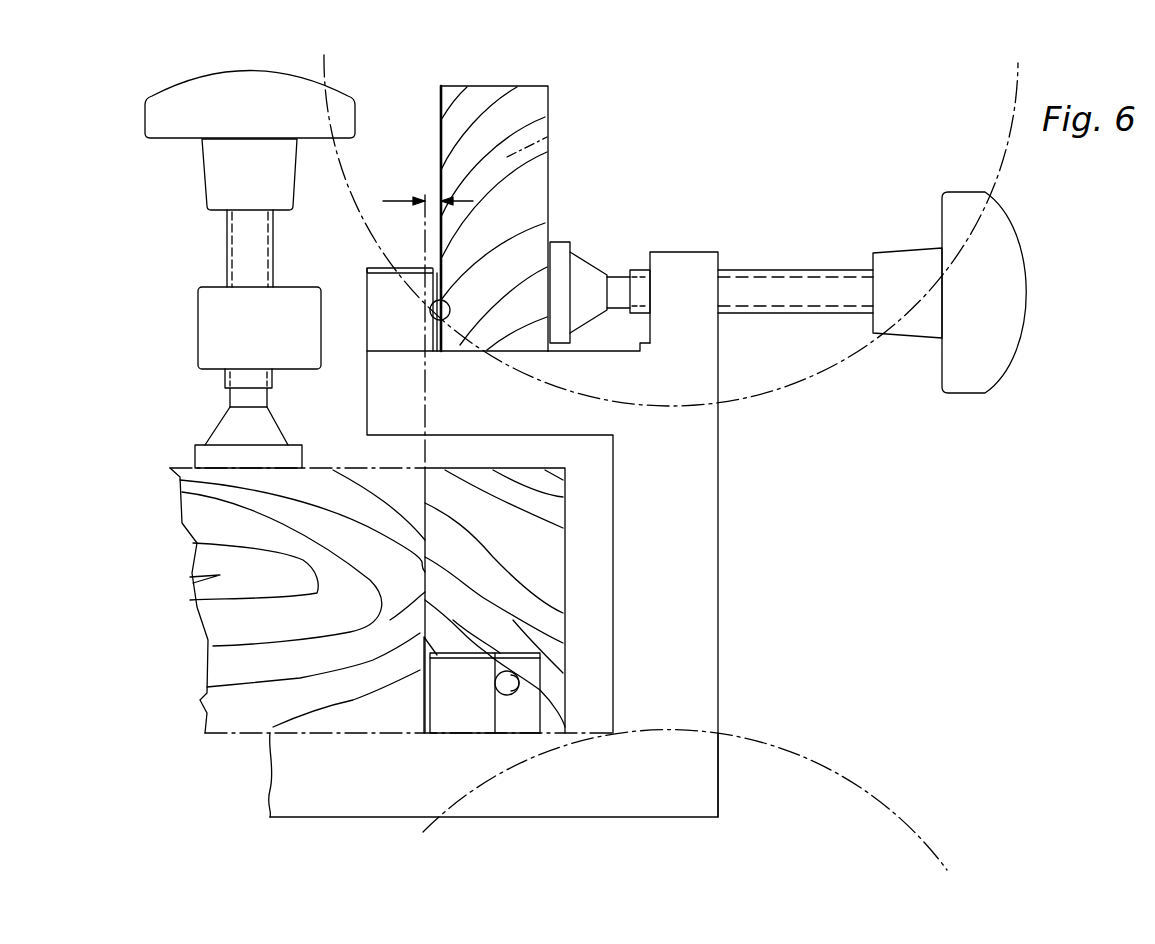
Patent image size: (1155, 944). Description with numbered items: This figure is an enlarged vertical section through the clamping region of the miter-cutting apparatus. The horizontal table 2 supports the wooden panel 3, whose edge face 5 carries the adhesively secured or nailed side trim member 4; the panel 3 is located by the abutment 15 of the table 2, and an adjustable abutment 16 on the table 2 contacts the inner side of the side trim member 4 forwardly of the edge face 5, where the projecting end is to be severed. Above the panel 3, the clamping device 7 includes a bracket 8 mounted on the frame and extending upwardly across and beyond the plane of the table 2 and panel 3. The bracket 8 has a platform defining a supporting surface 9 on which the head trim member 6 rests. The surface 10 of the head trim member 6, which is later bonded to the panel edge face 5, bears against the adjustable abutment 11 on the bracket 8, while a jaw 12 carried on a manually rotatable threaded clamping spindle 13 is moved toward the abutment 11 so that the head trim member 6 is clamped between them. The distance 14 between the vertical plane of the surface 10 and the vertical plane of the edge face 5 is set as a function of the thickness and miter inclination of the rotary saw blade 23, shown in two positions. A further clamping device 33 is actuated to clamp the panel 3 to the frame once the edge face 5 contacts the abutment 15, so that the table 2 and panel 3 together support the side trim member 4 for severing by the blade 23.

The horizontal table 2 is at (692, 802).
The panel 3 is at (273, 700).
The side trim member 4 is at (556, 496).
The edge face 5 is at (423, 593).
The head trim member 6 is at (545, 142).
The clamping device 7 is at (574, 201).
The supporting element 8 is at (708, 532).
The supporting surface 9 is at (598, 353).
The surface 10 is at (440, 142).
The abutment 11 is at (450, 327).
The jaw 12 is at (580, 273).
The threaded clamping spindle 13 is at (820, 288).
The distance 14 is at (430, 196).
The abutment 15 is at (273, 770).
The abutment 16 is at (515, 690).
The rotary saw blade 23 is at (820, 373).
The clamping device 33 is at (285, 305).